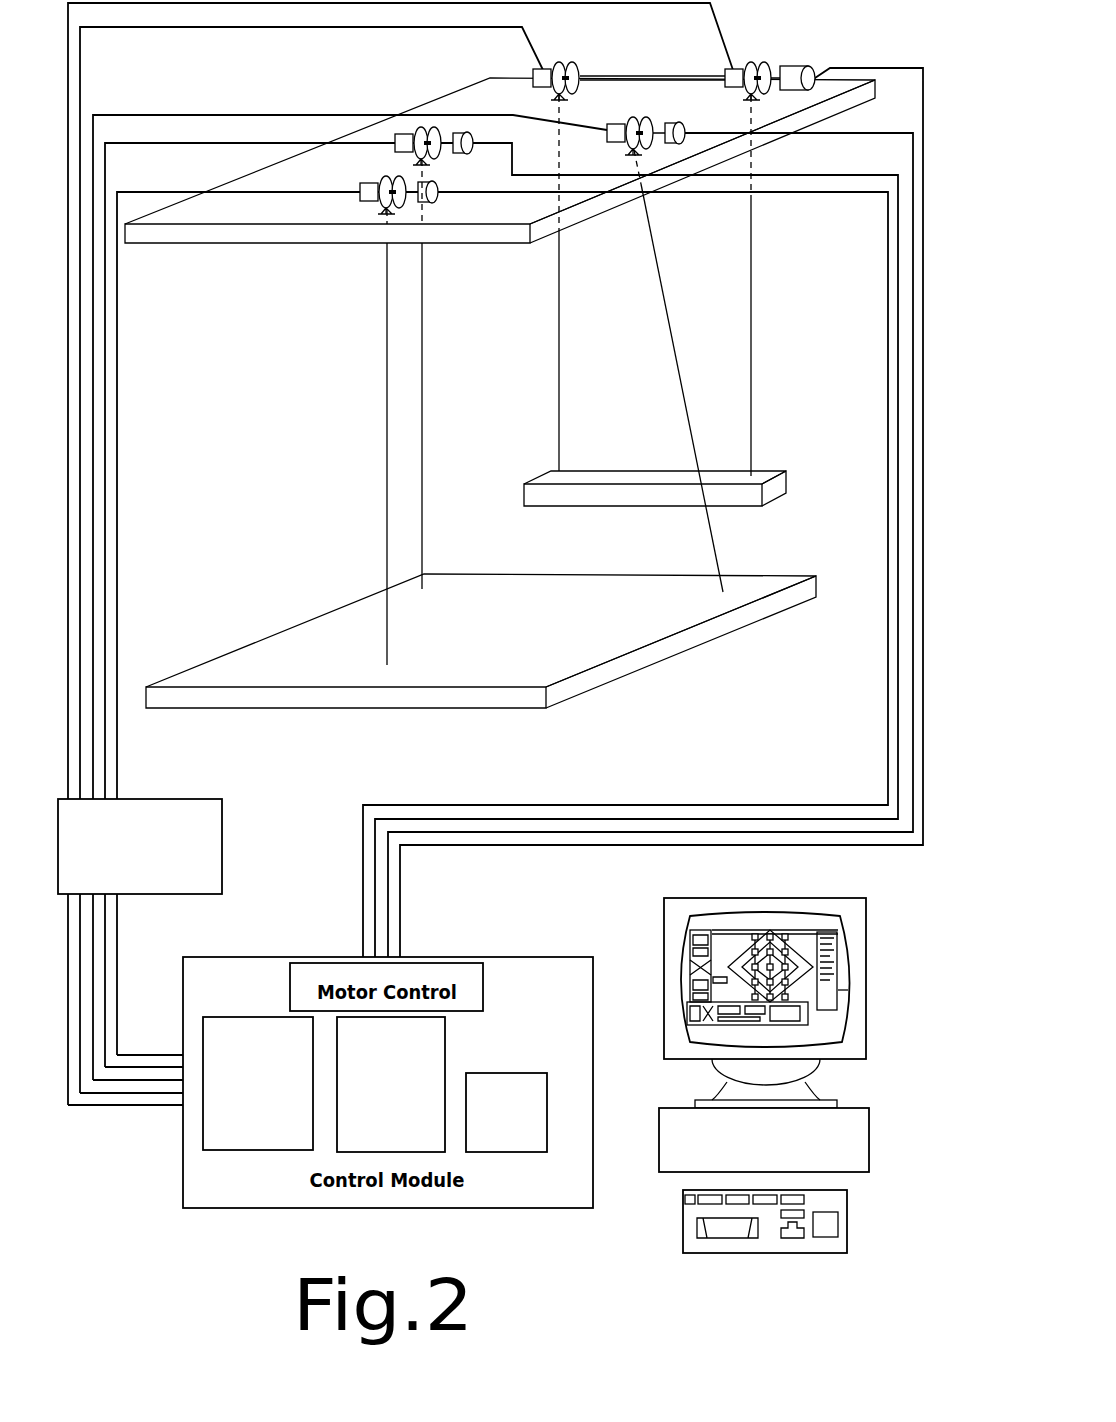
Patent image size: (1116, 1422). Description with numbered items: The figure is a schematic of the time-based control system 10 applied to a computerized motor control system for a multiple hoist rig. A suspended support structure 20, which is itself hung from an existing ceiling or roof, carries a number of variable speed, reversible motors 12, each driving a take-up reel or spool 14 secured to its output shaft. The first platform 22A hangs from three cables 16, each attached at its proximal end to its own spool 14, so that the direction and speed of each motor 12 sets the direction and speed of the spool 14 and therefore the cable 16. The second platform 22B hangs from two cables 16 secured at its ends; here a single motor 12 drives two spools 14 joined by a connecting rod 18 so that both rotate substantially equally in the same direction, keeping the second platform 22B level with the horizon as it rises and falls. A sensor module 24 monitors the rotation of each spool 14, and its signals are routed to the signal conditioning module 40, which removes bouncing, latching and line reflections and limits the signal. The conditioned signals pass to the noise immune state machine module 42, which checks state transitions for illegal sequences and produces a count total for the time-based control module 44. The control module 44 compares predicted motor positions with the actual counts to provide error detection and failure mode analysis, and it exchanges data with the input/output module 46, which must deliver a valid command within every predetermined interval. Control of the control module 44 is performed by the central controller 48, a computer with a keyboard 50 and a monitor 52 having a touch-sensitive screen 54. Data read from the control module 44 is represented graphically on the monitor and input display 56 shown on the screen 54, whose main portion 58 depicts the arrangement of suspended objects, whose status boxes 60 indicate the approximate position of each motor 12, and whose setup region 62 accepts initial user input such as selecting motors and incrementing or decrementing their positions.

The time-based control system 10 is at (866, 50).
The motor 12 is at (478, 135).
The spool 14 is at (421, 128).
The cable 16 is at (420, 362).
The connecting rod 18 is at (662, 76).
The suspended support structure 20 is at (507, 235).
The first platform 22A is at (563, 652).
The second platform 22B is at (563, 508).
The sensor module 24 is at (395, 134).
The signal conditioning module 40 is at (140, 799).
The noise immune state machine module 42 is at (260, 1017).
The time-based control module 44 is at (437, 1042).
The input/output module 46 is at (505, 1152).
The central controller 48 is at (869, 1140).
The keyboard 50 is at (847, 1218).
The monitor 52 is at (866, 922).
The touch-sensitive screen 54 is at (855, 950).
The monitor and input display 56 is at (832, 992).
The main portion 58 is at (722, 940).
The status box 60 is at (782, 935).
The setup region 62 is at (692, 945).